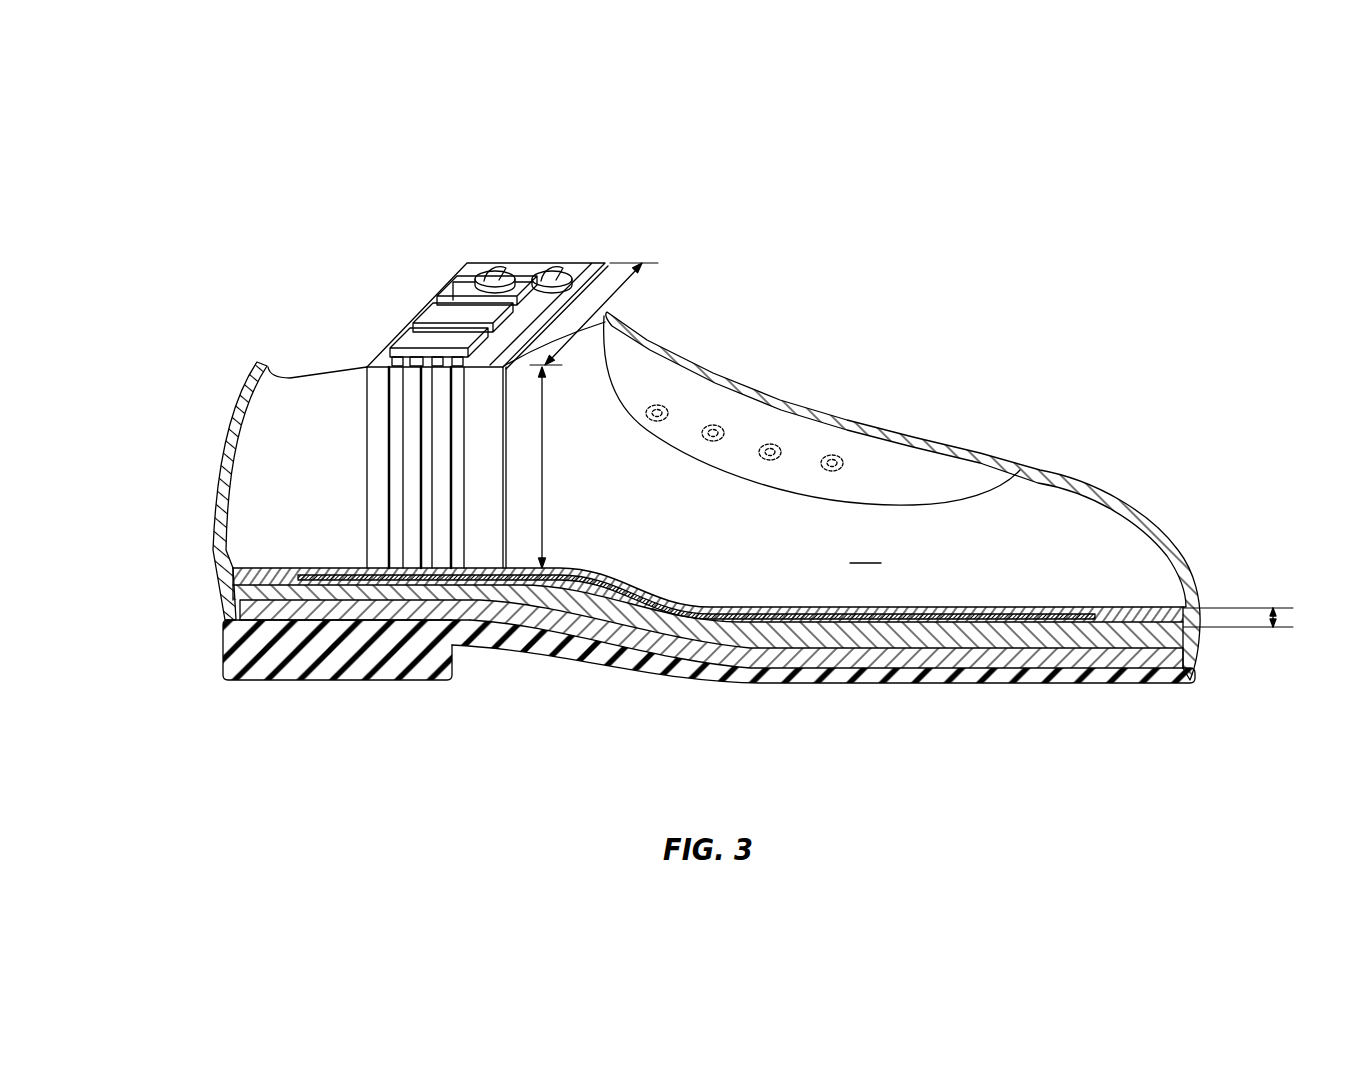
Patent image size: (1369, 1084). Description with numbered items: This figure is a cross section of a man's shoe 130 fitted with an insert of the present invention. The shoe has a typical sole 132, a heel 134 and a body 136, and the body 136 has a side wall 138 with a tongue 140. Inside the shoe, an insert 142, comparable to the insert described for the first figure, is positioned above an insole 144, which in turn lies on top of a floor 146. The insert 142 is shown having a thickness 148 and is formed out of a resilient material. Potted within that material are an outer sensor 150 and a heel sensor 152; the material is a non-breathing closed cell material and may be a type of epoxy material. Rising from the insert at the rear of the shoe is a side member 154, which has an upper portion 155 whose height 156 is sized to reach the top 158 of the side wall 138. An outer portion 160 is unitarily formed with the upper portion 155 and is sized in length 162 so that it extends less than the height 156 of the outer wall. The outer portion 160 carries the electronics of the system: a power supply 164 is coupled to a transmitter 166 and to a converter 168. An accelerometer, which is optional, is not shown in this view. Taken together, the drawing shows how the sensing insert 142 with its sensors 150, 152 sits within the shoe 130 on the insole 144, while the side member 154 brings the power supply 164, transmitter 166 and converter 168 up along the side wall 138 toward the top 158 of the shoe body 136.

The man's shoe 130 is at (884, 378).
The sole 132 is at (958, 680).
The heel 134 is at (325, 665).
The body 136 is at (1047, 468).
The side wall 138 is at (865, 550).
The tongue 140 is at (690, 377).
The insert 142 is at (707, 603).
The insole 144 is at (1067, 645).
The floor 146 is at (1117, 660).
The thickness 148 is at (1283, 621).
The outer sensor 150 is at (1007, 610).
The heel sensor 152 is at (340, 568).
The side member 154 is at (350, 371).
The upper portion 155 is at (364, 452).
The height 156 is at (543, 463).
The top of the side wall 158 is at (290, 376).
The outer portion 160 is at (411, 278).
The length 162 is at (605, 301).
The power supply 164 is at (523, 255).
The transmitter 166 is at (432, 318).
The converter 168 is at (410, 340).